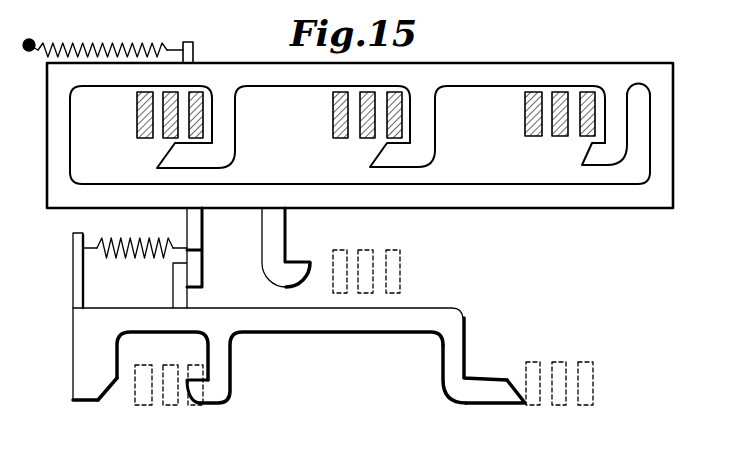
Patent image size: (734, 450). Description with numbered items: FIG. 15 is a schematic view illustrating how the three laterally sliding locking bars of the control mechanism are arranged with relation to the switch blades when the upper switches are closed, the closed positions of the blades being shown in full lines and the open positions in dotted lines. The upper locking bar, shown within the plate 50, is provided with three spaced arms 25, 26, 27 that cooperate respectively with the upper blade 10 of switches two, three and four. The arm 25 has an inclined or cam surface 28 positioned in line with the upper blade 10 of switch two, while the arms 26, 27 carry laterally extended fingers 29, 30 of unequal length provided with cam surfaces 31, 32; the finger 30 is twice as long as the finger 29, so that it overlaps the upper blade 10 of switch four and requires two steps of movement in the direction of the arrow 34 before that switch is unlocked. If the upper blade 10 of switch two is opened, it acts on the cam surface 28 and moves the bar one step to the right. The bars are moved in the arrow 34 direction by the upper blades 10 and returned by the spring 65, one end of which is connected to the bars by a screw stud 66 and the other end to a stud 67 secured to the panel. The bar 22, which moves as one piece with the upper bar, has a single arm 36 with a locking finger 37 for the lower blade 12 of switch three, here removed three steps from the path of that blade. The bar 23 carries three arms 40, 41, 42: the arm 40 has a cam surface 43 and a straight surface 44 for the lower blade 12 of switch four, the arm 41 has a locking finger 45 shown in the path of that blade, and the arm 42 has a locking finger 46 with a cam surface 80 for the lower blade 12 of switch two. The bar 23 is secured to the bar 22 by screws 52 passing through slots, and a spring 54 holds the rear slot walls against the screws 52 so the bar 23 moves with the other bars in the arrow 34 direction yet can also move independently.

The cam plate 50 is at (47, 133).
The bar 22 is at (315, 194).
The arm 27 is at (255, 58).
The arm 26 is at (427, 125).
The arm 25 is at (617, 112).
The cam surface 32 is at (168, 152).
The cam surface 31 is at (383, 146).
The cam surface 28 is at (590, 149).
The finger 30 is at (164, 168).
The finger 29 is at (414, 166).
The upper blade 10 is at (137, 97).
The lower blade 12 is at (400, 257).
The arrow 34 is at (575, 38).
The stud 67 is at (29, 39).
The spring 65 is at (98, 38).
The screw stud 66 is at (205, 36).
The screw 52 is at (197, 263).
The spring 54 is at (128, 236).
The arm 36 is at (280, 223).
The locking finger 37 is at (298, 268).
The arm 40 is at (75, 382).
The cam surface 43 is at (117, 378).
The straight surface 44 is at (120, 350).
The locking finger 45 is at (197, 398).
The arm 41 is at (222, 362).
The bar 23 is at (327, 328).
The arm 42 is at (443, 361).
The locking finger 46 is at (468, 380).
The cam surface 80 is at (508, 378).